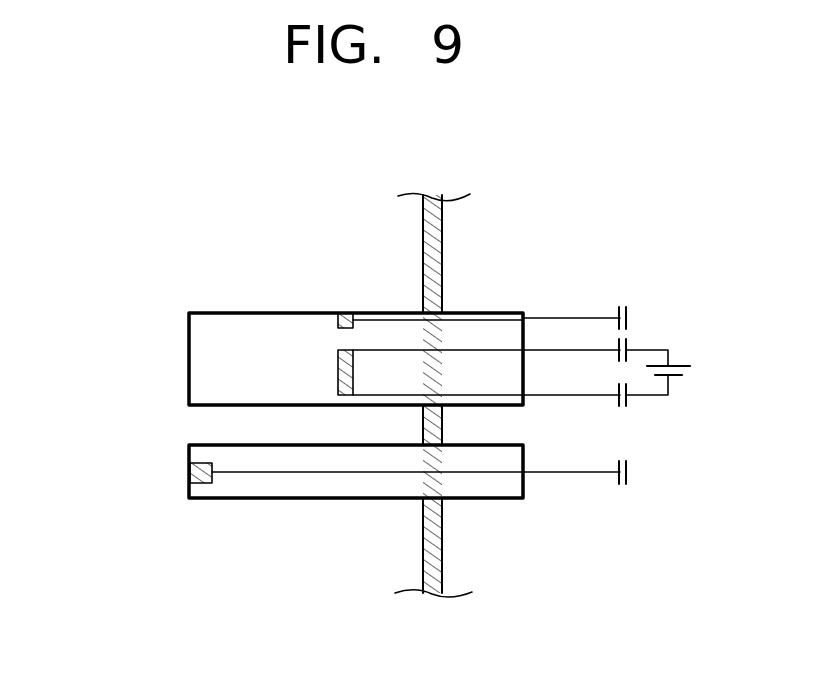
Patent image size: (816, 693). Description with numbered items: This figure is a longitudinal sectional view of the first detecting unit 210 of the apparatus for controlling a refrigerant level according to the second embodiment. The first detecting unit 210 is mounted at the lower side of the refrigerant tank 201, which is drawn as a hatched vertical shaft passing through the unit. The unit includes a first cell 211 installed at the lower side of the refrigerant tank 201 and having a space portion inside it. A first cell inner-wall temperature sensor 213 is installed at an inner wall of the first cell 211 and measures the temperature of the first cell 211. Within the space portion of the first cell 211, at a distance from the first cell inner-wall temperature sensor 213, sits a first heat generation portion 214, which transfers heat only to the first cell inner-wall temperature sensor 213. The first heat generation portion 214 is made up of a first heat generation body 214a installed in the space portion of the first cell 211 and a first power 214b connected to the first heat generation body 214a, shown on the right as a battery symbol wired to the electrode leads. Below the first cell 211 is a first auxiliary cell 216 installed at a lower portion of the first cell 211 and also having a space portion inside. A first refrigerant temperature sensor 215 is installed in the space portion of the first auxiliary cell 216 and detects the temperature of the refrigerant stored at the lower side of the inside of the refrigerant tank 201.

The refrigerant tank 201 is at (445, 228).
The first detecting unit 210 is at (348, 402).
The first cell 211 is at (220, 312).
The first cell inner-wall temperature sensor 213 is at (348, 312).
The first heat generation portion 214 is at (522, 455).
The first heat generation body 214a is at (350, 367).
The first power 214b is at (677, 380).
The first refrigerant temperature sensor 215 is at (188, 468).
The first auxiliary cell 216 is at (312, 498).